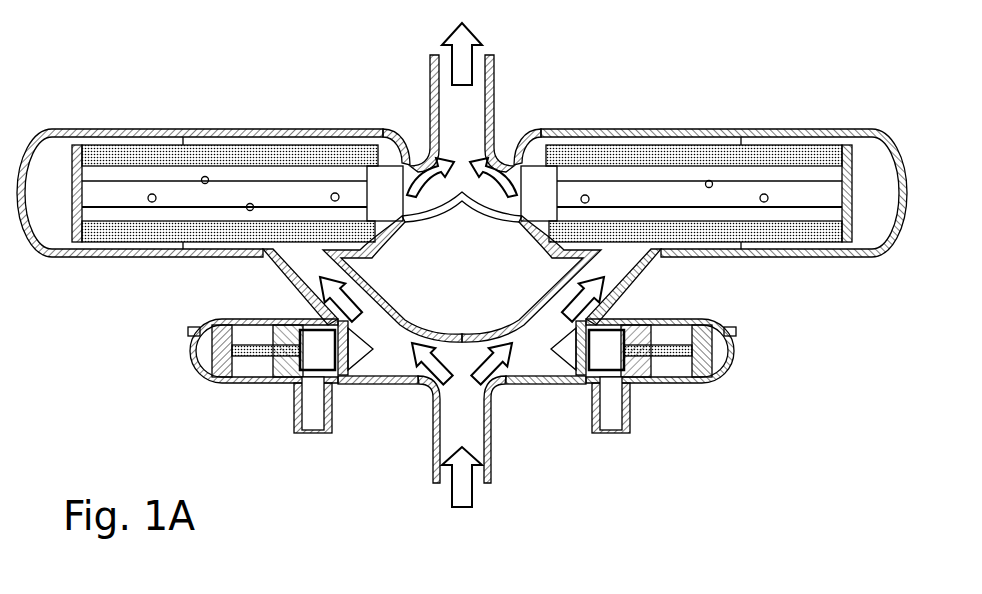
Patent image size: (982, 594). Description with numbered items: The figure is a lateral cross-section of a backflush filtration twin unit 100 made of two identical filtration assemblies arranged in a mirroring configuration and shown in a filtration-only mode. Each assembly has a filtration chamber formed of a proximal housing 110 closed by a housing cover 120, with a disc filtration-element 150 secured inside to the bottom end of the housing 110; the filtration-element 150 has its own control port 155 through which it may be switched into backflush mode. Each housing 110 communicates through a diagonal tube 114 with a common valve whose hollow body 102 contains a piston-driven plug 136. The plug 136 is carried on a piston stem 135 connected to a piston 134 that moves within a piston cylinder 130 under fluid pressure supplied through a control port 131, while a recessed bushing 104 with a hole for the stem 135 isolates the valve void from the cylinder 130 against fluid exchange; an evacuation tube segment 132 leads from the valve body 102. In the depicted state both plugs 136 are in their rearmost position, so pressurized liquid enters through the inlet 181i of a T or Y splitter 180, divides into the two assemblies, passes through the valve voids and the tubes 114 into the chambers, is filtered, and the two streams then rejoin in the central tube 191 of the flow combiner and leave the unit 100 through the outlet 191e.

The backflush filtration twin unit 100 is at (118, 72).
The hollow body of the common valve 102 is at (552, 387).
The recessed bushing 104 is at (273, 325).
The filtration chamber housing 110 is at (353, 131).
The diagonal tube 114 is at (557, 278).
The housing cover 120 is at (77, 258).
The piston cylinder 130 is at (193, 356).
The control port 131 is at (189, 332).
The evacuation tube segment 132 is at (307, 437).
The piston 134 is at (218, 382).
The piston stem 135 is at (270, 352).
The plug 136 is at (343, 386).
The disc filtration-element 150 is at (232, 158).
The control port of the filtration-element 155 is at (432, 218).
The T or Y splitter 180 is at (492, 437).
The inlet 181i is at (470, 488).
The central tube of the flow combiner 191 is at (486, 104).
The outlet 191e is at (440, 60).